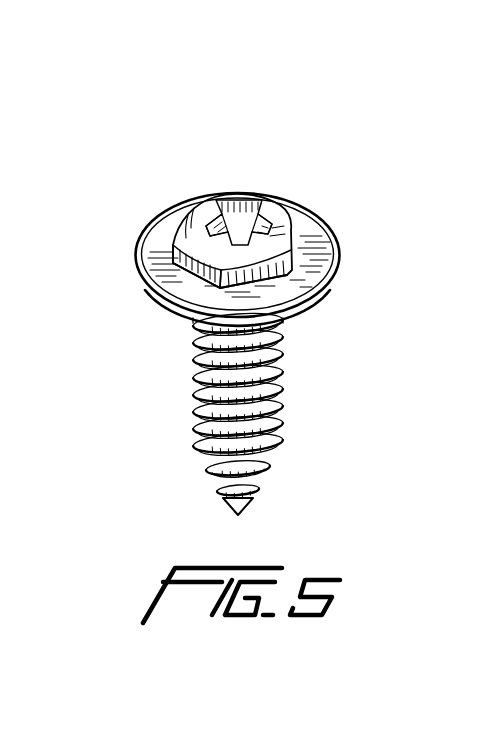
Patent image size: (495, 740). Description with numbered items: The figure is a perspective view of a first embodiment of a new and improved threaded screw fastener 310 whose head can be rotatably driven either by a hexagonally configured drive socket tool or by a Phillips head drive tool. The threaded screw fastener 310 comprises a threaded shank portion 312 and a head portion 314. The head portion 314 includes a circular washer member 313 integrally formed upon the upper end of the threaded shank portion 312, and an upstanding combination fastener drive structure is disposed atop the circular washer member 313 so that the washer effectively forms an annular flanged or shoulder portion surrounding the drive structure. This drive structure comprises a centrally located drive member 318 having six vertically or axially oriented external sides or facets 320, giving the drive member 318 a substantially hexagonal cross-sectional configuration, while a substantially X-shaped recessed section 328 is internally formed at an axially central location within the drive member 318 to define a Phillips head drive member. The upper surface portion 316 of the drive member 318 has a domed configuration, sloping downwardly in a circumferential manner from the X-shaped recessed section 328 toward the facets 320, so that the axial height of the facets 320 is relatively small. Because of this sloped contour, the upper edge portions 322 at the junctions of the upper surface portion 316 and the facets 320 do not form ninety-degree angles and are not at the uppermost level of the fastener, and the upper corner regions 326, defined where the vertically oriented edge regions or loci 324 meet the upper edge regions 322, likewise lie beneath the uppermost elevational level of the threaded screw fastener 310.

The threaded screw fastener 310 is at (298, 124).
The threaded shank portion 312 is at (283, 413).
The circular washer member 313 is at (332, 282).
The head portion 314 is at (140, 266).
The upper surface portion 316 is at (337, 240).
The drive member 318 is at (163, 228).
The external sides or facets 320 is at (207, 272).
The upper edge portions 322 is at (172, 270).
The vertically oriented edge regions or loci 324 is at (238, 288).
The upper corner regions 326 is at (217, 232).
The X-shaped recessed section 328 is at (245, 205).